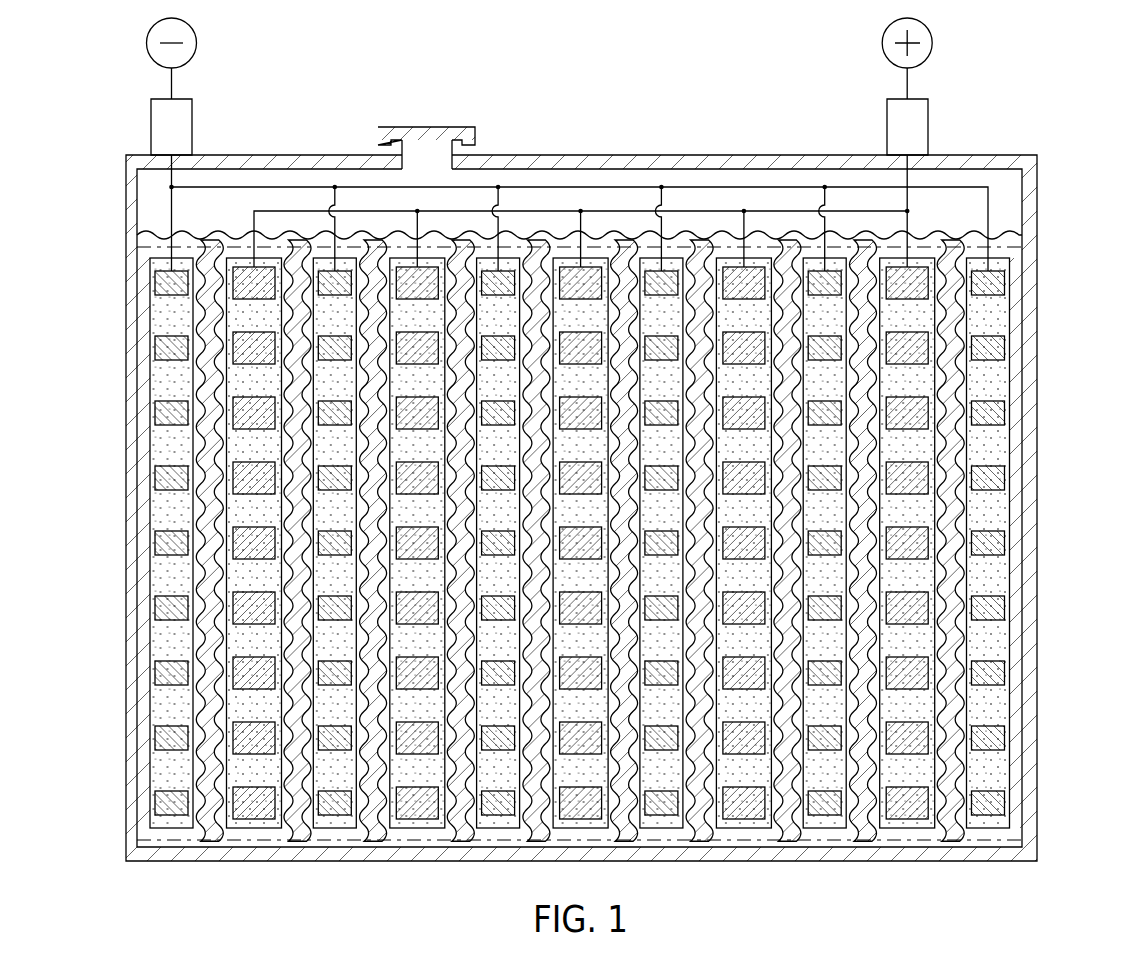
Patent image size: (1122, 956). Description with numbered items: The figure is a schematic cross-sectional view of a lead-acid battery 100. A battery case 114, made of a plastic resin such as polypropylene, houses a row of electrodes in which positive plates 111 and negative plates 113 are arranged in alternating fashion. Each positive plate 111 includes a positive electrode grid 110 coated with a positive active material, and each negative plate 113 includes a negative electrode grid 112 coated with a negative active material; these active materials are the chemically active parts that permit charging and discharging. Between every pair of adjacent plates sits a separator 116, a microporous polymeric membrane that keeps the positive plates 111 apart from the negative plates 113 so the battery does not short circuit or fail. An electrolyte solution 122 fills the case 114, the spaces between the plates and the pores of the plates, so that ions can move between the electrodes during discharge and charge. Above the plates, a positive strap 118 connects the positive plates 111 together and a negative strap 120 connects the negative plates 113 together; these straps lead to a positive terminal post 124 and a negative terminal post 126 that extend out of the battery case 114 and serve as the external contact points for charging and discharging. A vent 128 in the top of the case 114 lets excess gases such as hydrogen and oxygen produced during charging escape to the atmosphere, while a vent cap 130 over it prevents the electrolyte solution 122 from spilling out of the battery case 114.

The lead-acid battery 100 is at (1042, 104).
The positive electrode grid 110 is at (260, 812).
The positive plate 111 is at (237, 388).
The negative electrode grid 112 is at (160, 347).
The negative plate 113 is at (165, 513).
The battery case 114 is at (1037, 673).
The separator 116 is at (217, 833).
The positive strap 118 is at (281, 211).
The negative strap 120 is at (992, 202).
The electrolyte solution 122 is at (1015, 253).
The positive terminal post 124 is at (893, 128).
The negative terminal post 126 is at (158, 128).
The vent 128 is at (393, 152).
The vent cap 130 is at (423, 127).